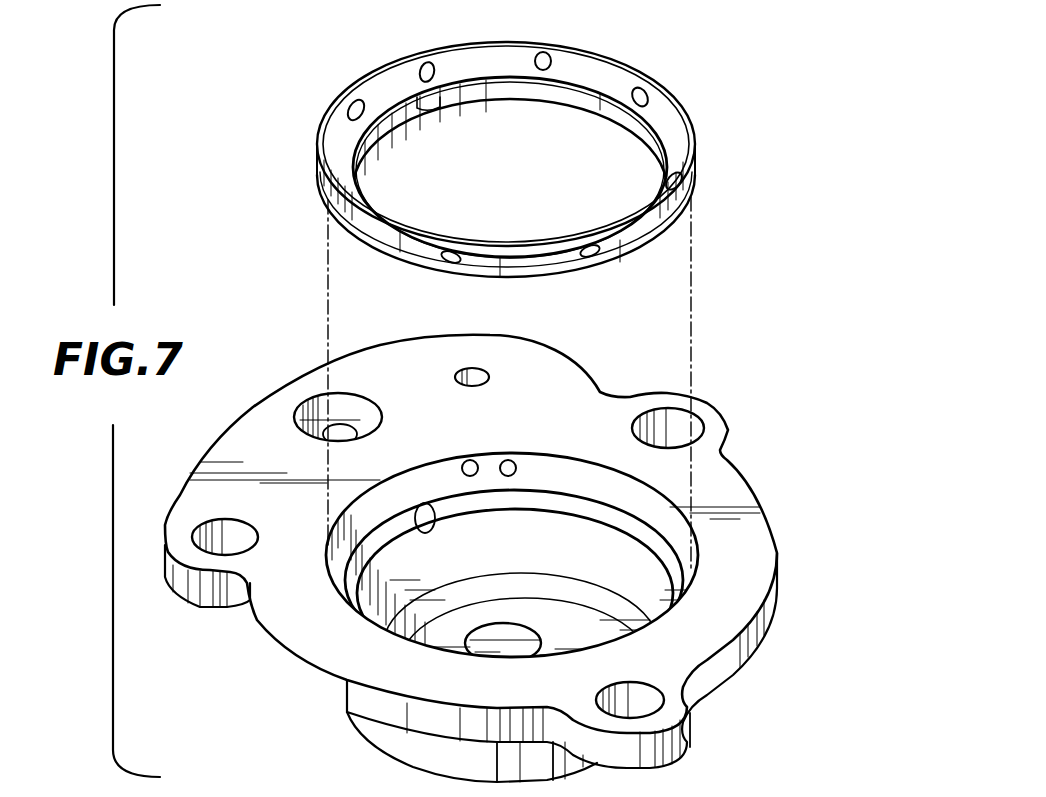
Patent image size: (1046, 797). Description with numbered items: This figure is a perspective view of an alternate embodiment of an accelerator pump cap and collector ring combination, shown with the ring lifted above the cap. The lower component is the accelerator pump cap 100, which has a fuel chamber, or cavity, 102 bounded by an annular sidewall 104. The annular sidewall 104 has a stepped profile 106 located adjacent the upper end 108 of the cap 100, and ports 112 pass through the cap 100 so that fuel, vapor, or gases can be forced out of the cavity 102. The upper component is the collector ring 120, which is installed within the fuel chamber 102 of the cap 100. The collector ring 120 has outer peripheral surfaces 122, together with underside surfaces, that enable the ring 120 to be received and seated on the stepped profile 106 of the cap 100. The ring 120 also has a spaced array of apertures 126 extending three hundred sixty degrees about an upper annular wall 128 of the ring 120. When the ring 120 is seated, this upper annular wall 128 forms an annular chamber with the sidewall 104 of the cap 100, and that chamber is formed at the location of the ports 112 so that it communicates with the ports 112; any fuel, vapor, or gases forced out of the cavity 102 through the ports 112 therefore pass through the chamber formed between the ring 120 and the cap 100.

The accelerator pump cap 100 is at (243, 443).
The fuel chamber 102 is at (440, 648).
The annular sidewall 104 is at (573, 553).
The stepped profile 106 is at (670, 565).
The upper end 108 is at (583, 455).
The ports 112 is at (503, 458).
The collector ring 120 is at (677, 105).
The outer peripheral surfaces 122 is at (553, 276).
The apertures 126 is at (348, 100).
The upper annular wall 128 is at (673, 155).